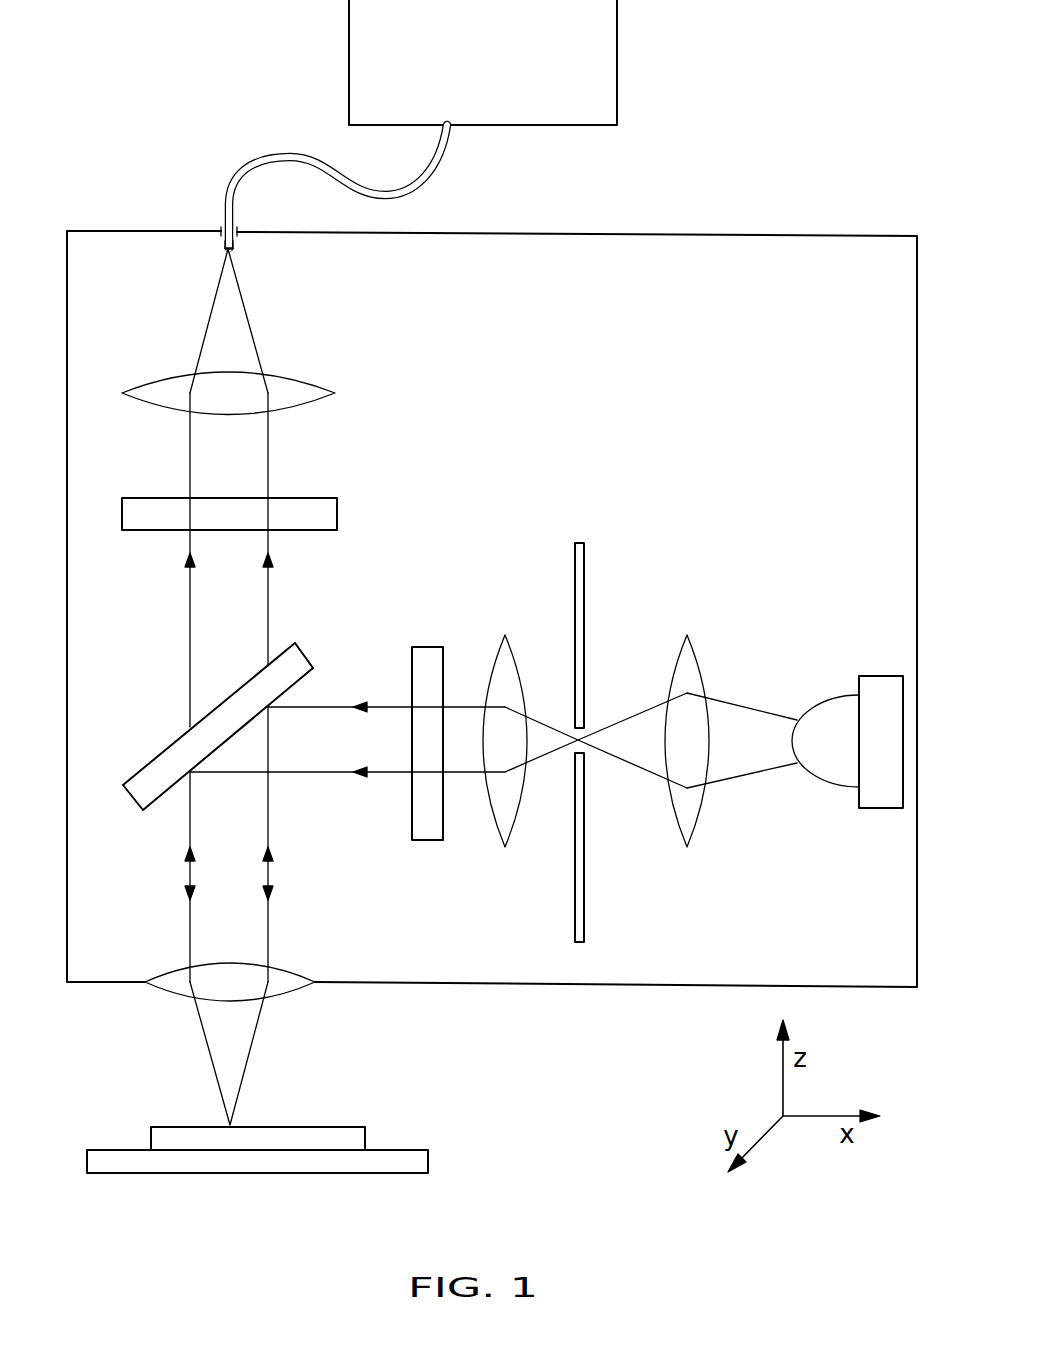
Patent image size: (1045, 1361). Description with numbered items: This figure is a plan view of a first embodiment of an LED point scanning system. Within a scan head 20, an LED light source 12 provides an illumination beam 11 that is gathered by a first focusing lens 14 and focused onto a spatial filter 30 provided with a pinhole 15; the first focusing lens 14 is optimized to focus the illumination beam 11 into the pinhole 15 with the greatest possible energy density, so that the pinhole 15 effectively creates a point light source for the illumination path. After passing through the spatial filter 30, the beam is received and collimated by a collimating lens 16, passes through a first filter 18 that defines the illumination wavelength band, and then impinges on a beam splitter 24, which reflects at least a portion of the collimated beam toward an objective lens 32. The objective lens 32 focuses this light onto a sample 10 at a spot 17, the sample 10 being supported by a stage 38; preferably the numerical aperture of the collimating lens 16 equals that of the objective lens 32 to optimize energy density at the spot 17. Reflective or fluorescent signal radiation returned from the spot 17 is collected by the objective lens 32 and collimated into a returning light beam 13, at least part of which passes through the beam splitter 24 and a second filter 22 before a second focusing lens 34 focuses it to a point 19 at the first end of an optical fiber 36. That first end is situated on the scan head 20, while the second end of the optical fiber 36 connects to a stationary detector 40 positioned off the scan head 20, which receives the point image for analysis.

The sample 10 is at (338, 1125).
The illumination beam 11 is at (752, 776).
The LED light source 12 is at (838, 706).
The returning light beam 13 is at (188, 628).
The first focusing lens 14 is at (692, 640).
The pinhole 15 is at (575, 762).
The collimating lens 16 is at (513, 640).
The spot 17 is at (216, 1118).
The first filter 18 is at (425, 645).
The point 19 is at (239, 253).
The scan head 20 is at (816, 233).
The second filter 22 is at (337, 512).
The beam splitter 24 is at (158, 753).
The spatial filter 30 is at (578, 541).
The objective lens 32 is at (298, 972).
The second focusing lens 34 is at (335, 393).
The optical fiber 36 is at (233, 180).
The stage 38 is at (116, 1176).
The detector 40 is at (617, 88).